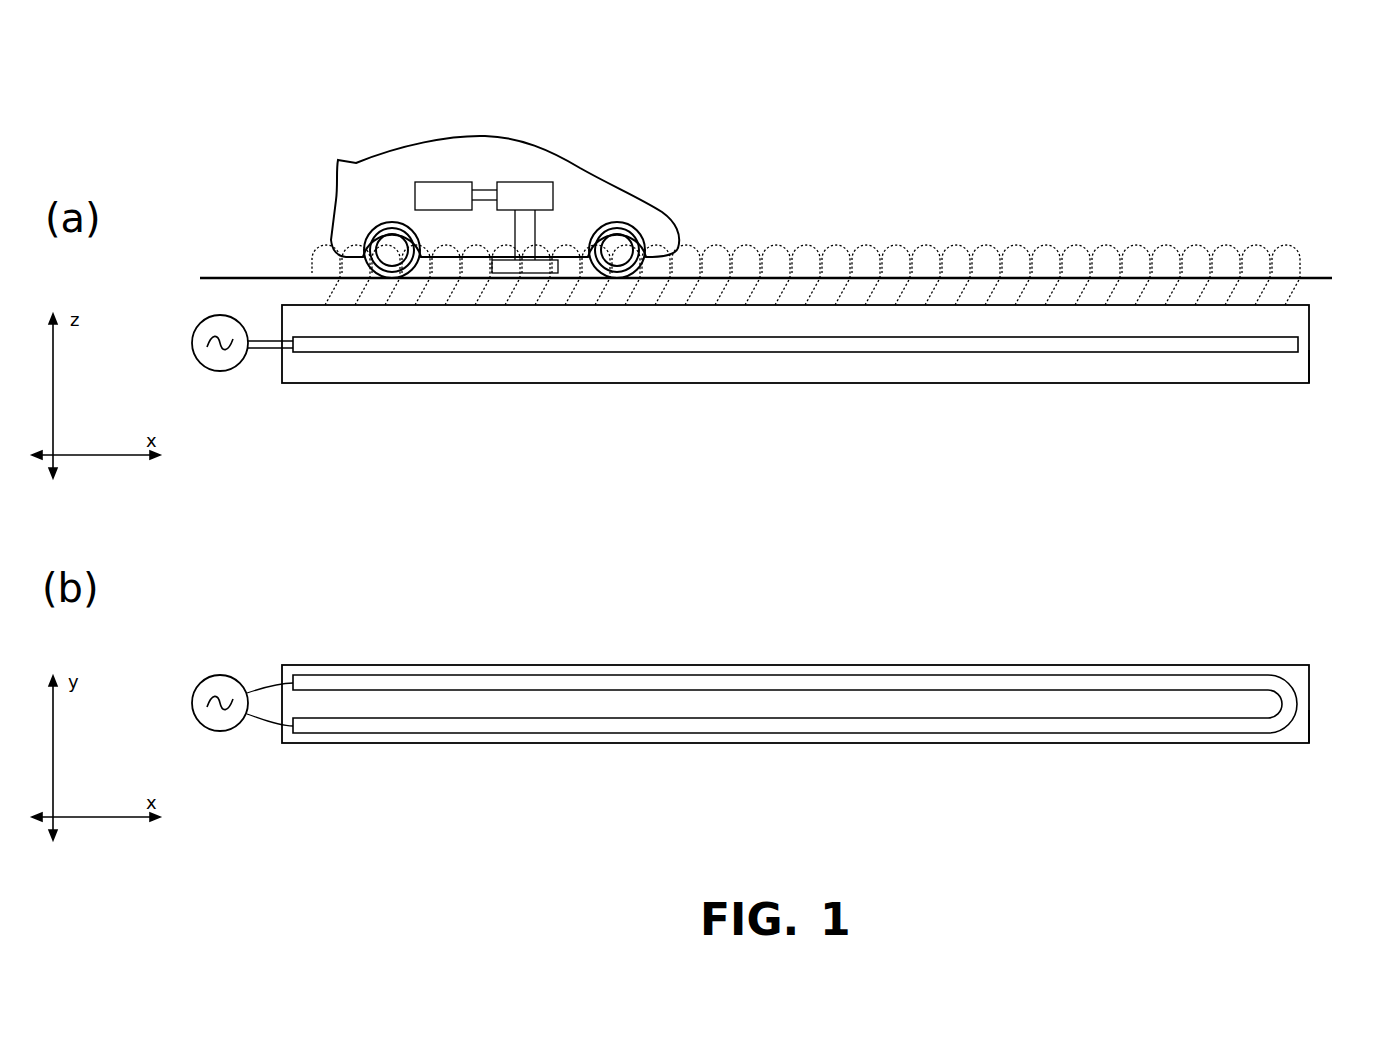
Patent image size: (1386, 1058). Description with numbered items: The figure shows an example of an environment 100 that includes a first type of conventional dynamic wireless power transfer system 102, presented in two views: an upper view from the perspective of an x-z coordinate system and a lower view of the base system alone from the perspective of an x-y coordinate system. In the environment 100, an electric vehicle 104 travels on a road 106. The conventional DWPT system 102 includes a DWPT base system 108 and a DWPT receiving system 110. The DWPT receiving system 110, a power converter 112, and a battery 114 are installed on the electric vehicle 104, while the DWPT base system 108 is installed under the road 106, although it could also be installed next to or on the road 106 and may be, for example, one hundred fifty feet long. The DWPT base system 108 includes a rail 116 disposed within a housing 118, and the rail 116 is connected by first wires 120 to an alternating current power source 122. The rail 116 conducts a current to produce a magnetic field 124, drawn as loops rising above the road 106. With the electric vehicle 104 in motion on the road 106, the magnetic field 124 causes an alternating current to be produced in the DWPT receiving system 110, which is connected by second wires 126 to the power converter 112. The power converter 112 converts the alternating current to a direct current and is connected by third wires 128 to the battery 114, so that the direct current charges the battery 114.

The environment 100 is at (206, 27).
The conventional DWPT system 102 is at (447, 180).
The electric vehicle 104 is at (516, 148).
The road 106 is at (230, 276).
The DWPT base system 108 is at (1318, 345).
The DWPT receiving system 110 is at (491, 264).
The power converter 112 is at (525, 196).
The battery 114 is at (443, 196).
The rail 116 is at (541, 354).
The housing 118 is at (1294, 380).
The first wires 120 is at (271, 353).
The alternating current power source 122 is at (213, 370).
The magnetic field 124 is at (1313, 248).
The second wires 126 is at (537, 222).
The third wires 128 is at (484, 189).